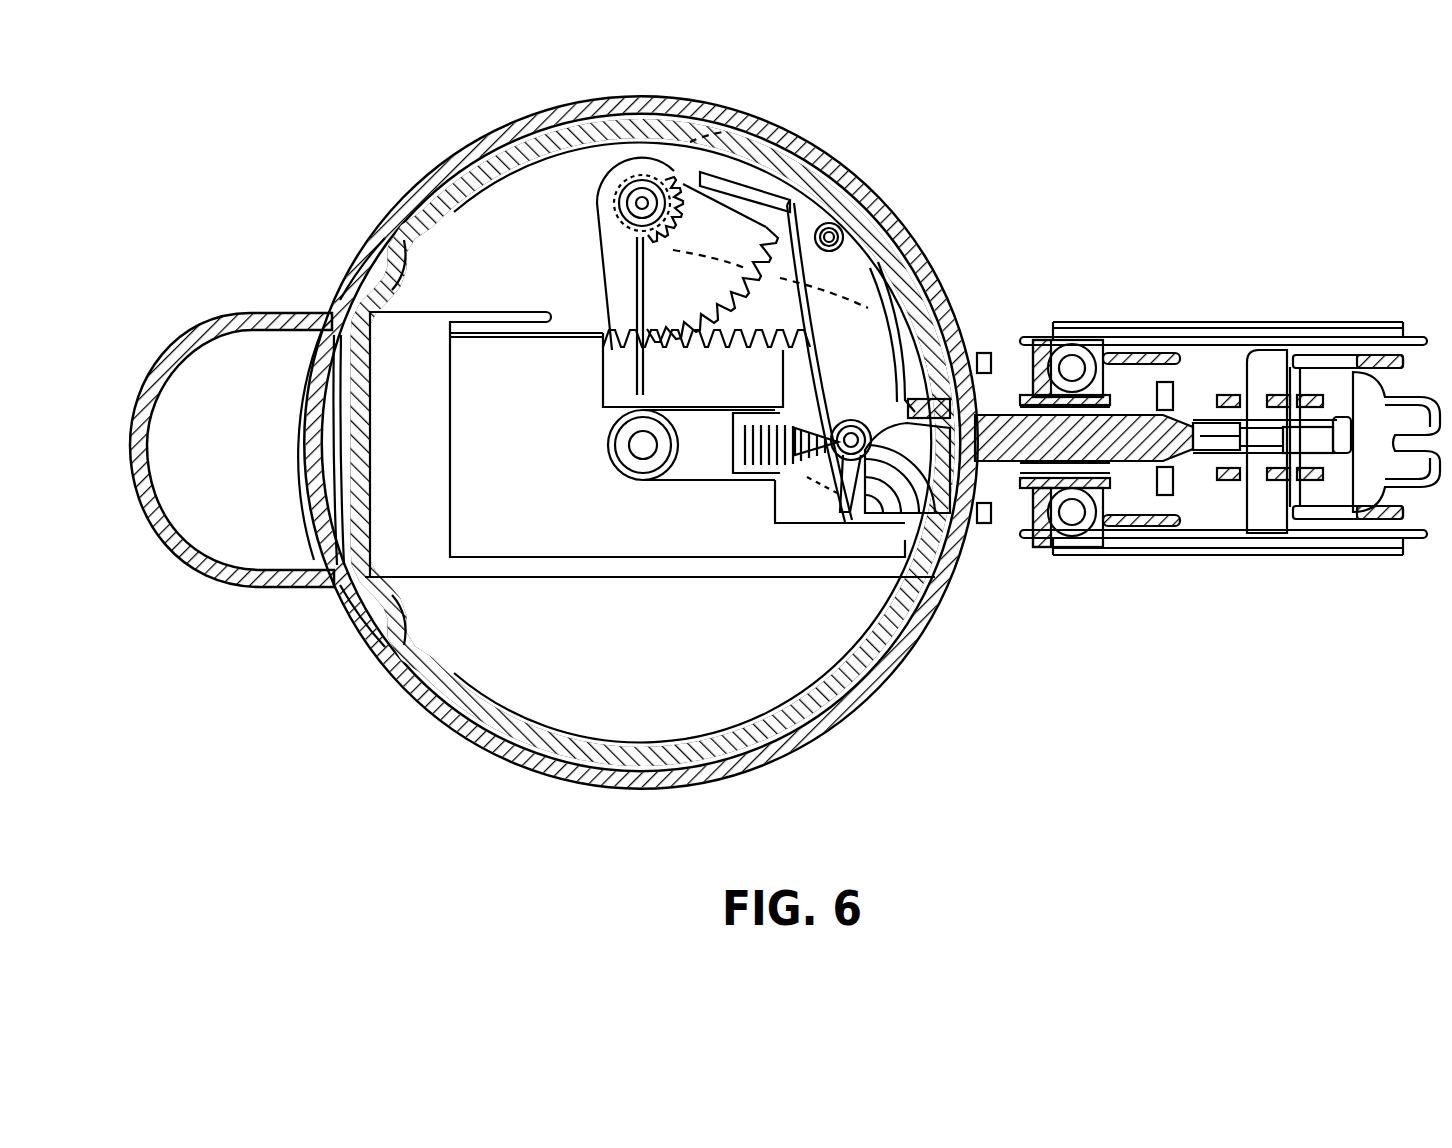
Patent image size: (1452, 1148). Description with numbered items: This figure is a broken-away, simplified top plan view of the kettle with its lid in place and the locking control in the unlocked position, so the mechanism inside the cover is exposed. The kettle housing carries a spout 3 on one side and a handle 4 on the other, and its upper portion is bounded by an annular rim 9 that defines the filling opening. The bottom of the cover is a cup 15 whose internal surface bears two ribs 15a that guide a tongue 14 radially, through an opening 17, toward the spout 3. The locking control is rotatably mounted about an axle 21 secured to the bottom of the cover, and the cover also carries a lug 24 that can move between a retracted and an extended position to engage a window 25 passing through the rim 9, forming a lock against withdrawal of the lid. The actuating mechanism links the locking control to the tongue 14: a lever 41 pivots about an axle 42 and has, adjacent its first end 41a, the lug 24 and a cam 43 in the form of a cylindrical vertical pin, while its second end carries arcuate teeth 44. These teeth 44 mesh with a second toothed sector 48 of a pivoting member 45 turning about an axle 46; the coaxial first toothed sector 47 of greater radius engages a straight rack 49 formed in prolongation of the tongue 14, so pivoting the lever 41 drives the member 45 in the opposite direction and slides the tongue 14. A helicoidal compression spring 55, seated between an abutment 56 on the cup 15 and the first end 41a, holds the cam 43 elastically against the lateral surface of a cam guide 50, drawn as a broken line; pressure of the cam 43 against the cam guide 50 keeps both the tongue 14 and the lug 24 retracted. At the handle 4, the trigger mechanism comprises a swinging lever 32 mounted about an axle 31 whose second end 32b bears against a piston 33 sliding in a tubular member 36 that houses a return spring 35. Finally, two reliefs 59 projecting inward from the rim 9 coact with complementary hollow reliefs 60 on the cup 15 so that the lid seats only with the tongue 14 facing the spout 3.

The spout 3 is at (185, 340).
The handle 4 is at (1303, 548).
The rim 9 is at (630, 790).
The tongue 14 is at (317, 370).
The cup 15 is at (660, 790).
The ribs 15a is at (478, 325).
The opening 17 is at (348, 524).
The axle 21 is at (630, 462).
The lug 24 is at (947, 522).
The window 25 is at (968, 413).
The axle 31 is at (1277, 363).
The lever 32 is at (1270, 440).
The second end 32b is at (1185, 430).
The piston 33 is at (1130, 447).
The spring 35 is at (1070, 408).
The tubular member 36 is at (1128, 410).
The lever 41 is at (857, 288).
The first end 41a is at (849, 460).
The axle 42 is at (840, 227).
The cam 43 is at (832, 480).
The teeth 44 is at (722, 170).
The pivoting member 45 is at (618, 252).
The axle 46 is at (635, 196).
The first toothed sector 47 is at (640, 330).
The second toothed sector 48 is at (671, 172).
The straight rack 49 is at (715, 352).
The cam guide 50 is at (940, 278).
The helicoidal compression spring 55 is at (770, 465).
The abutment 56 is at (735, 442).
The reliefs 59 is at (372, 268).
The hollow reliefs 60 is at (400, 283).